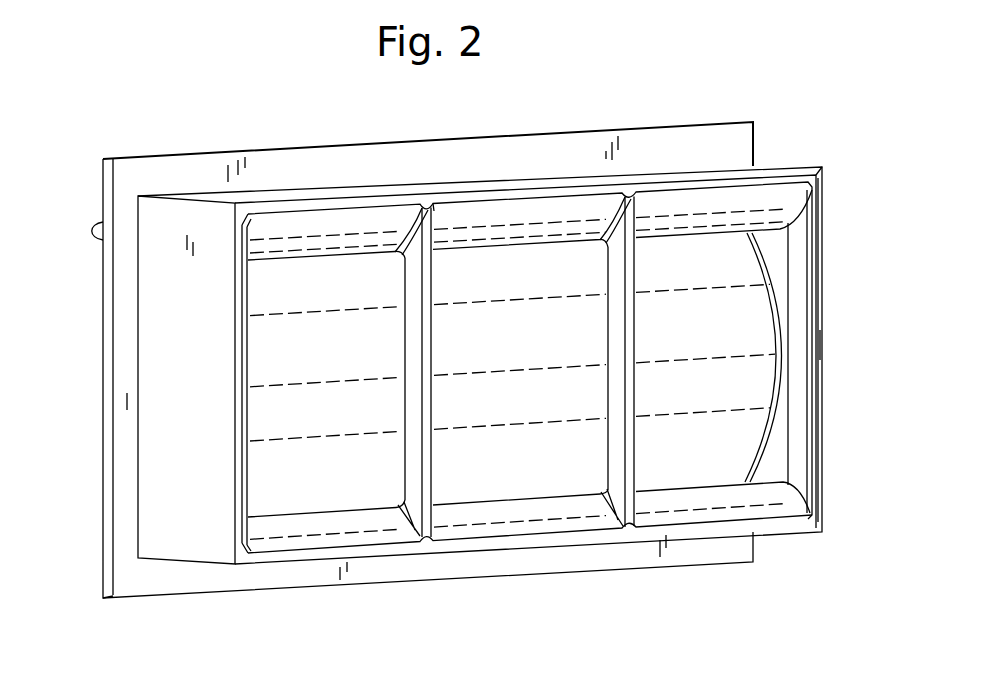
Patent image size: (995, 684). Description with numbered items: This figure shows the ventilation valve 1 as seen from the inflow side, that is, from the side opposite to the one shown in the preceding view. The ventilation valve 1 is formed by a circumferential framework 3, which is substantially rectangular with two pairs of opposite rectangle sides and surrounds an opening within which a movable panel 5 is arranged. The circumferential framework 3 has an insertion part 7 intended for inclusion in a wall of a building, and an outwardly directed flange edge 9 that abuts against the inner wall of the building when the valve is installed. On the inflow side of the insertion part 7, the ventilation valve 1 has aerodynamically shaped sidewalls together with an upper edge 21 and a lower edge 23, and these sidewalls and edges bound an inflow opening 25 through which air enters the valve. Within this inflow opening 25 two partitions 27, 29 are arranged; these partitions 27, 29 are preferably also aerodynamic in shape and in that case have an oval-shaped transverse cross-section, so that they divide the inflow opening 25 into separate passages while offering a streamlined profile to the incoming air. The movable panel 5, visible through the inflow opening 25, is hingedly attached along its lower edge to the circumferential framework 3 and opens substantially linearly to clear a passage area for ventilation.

The ventilation valve 1 is at (200, 128).
The circumferential framework 3 is at (102, 352).
The movable panel 5 is at (506, 344).
The insertion part 7 is at (178, 509).
The flange edge 9 is at (655, 145).
The upper edge 21 is at (737, 200).
The lower edge 23 is at (710, 504).
The inflow opening 25 is at (695, 333).
The partition 27 is at (413, 457).
The partition 29 is at (612, 455).